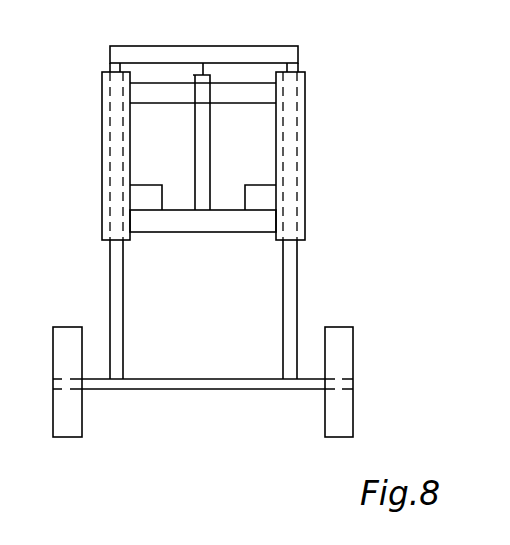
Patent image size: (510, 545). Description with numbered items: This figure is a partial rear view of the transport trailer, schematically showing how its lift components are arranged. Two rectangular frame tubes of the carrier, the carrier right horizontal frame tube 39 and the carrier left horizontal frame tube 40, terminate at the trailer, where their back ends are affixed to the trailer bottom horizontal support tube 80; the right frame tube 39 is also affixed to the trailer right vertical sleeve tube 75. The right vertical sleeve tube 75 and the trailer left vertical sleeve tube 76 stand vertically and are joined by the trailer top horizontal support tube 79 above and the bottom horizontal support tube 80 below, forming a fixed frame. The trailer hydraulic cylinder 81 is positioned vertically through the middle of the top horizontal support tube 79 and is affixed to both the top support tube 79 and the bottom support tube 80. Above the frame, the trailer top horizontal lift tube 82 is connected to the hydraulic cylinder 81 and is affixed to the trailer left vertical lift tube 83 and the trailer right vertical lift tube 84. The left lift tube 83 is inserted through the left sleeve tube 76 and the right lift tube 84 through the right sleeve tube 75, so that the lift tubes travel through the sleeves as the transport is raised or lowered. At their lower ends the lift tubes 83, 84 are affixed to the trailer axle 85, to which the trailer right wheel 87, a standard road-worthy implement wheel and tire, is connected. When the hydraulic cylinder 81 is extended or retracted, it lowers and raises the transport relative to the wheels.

The carrier right horizontal frame tube 39 is at (256, 185).
The carrier left horizontal frame tube 40 is at (147, 186).
The trailer right vertical sleeve tube 75 is at (305, 163).
The trailer left vertical sleeve tube 76 is at (102, 151).
The trailer top horizontal support tube 79 is at (168, 88).
The trailer bottom horizontal support tube 80 is at (220, 232).
The trailer hydraulic cylinder 81 is at (210, 133).
The trailer top horizontal lift tube 82 is at (240, 46).
The trailer left vertical lift tube 83 is at (110, 281).
The trailer right vertical lift tube 84 is at (293, 282).
The trailer axle 85 is at (202, 379).
The trailer right wheel 87 is at (350, 348).